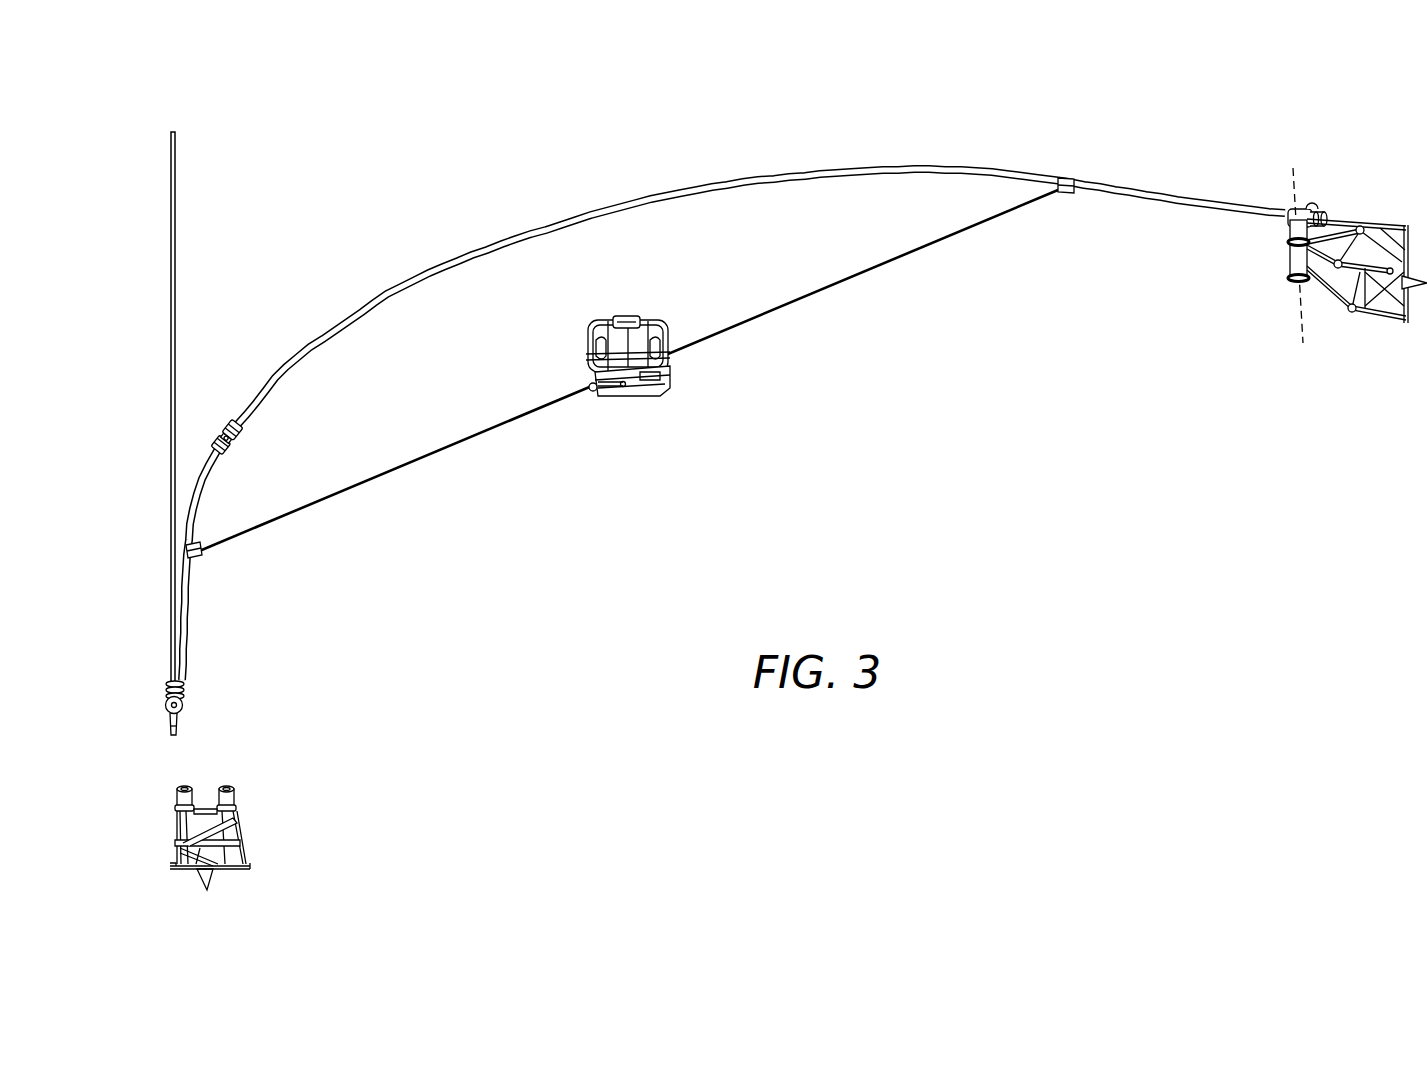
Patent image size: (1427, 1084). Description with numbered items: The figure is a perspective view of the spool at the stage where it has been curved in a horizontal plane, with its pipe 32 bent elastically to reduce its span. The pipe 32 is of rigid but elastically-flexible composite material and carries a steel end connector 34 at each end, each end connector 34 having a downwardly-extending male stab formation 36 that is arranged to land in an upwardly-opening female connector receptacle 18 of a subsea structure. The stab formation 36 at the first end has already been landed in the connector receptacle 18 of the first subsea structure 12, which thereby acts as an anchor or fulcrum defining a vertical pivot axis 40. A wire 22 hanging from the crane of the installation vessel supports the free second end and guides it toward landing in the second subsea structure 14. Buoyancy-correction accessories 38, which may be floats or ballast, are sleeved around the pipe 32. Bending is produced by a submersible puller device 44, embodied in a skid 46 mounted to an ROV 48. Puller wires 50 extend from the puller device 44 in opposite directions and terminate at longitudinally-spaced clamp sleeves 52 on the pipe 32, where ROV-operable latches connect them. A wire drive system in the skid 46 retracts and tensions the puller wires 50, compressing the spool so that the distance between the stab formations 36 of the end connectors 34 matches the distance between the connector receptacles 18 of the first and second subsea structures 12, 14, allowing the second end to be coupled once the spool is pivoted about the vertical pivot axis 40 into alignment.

The first subsea structure 12 is at (1378, 318).
The second subsea structure 14 is at (237, 827).
The connector receptacle 18 is at (180, 796).
The wire 22 is at (178, 172).
The pipe 32 is at (569, 216).
The end connector 34 is at (163, 704).
The stab formation 36 is at (180, 716).
The buoyancy-correction accessory 38 is at (248, 437).
The vertical pivot axis 40 is at (1298, 318).
The puller device 44 is at (679, 359).
The skid 46 is at (655, 398).
The ROV 48 is at (612, 320).
The puller wire 50 is at (440, 455).
The clamp sleeve 52 is at (197, 558).